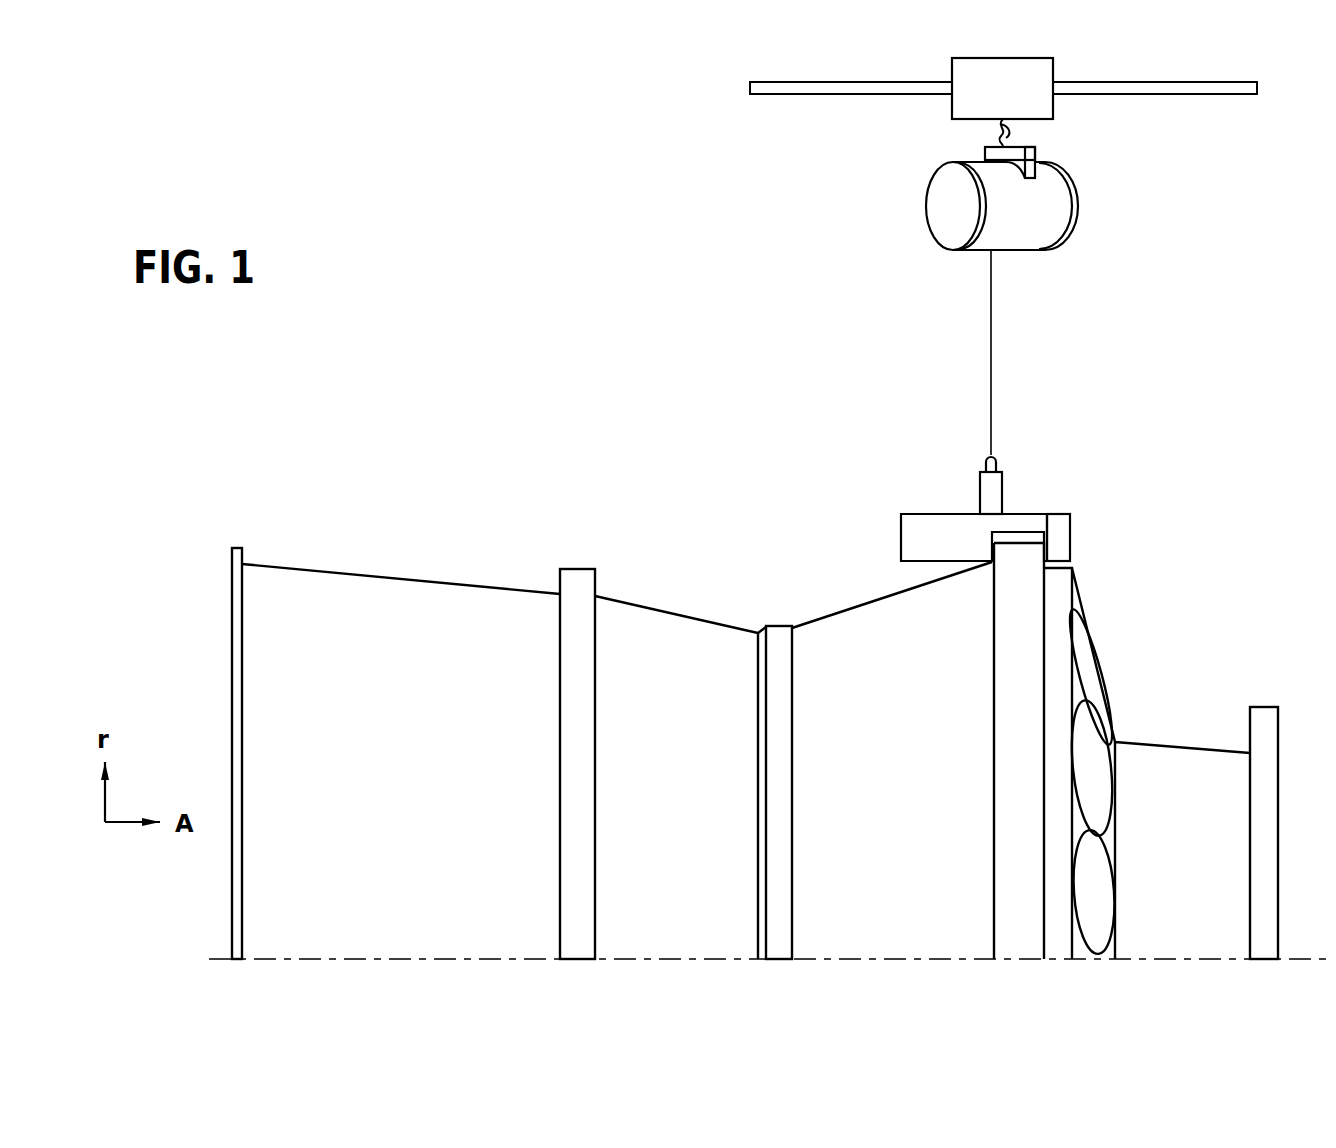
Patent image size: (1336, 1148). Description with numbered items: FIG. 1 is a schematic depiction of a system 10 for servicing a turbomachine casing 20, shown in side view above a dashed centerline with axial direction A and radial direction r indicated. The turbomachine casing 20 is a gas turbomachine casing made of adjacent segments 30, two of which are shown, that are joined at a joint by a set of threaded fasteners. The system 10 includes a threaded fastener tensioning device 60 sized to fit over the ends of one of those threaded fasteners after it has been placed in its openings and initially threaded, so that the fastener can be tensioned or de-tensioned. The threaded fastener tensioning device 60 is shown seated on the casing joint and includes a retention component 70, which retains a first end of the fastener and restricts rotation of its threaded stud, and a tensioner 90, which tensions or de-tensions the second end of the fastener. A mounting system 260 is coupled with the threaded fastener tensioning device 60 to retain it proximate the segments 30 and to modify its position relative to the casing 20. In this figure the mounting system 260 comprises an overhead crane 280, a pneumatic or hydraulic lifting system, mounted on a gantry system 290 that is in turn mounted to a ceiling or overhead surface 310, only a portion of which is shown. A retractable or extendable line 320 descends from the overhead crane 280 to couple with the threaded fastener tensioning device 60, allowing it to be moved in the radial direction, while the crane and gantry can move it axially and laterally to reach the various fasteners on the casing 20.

The system 10 is at (720, 338).
The turbomachine casing 20 is at (400, 578).
The segments 30 is at (865, 603).
The threaded fastener tensioning device 60 is at (1020, 493).
The retention component 70 is at (1058, 530).
The tensioner 90 is at (932, 531).
The mounting system 260 is at (1103, 210).
The overhead crane 280 is at (998, 221).
The gantry system 290 is at (982, 98).
The overhead surface 310 is at (762, 70).
The line 320 is at (1012, 349).